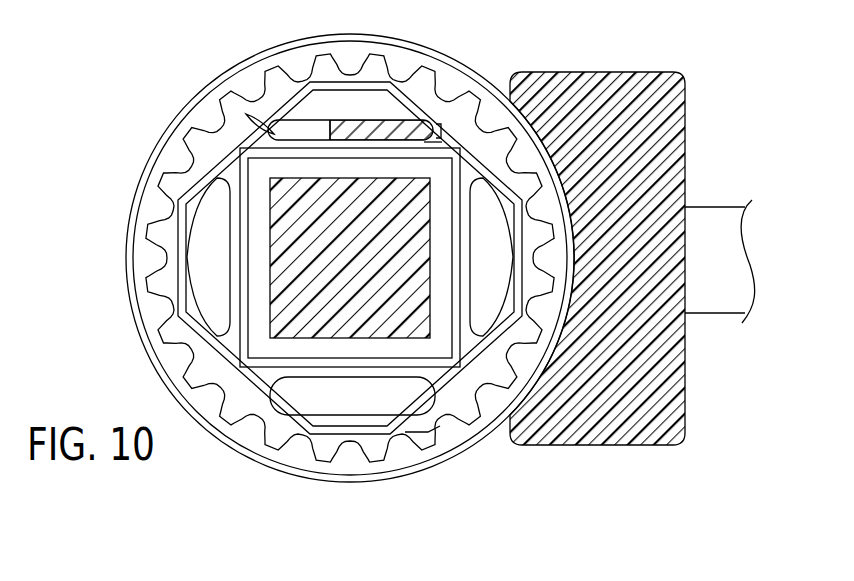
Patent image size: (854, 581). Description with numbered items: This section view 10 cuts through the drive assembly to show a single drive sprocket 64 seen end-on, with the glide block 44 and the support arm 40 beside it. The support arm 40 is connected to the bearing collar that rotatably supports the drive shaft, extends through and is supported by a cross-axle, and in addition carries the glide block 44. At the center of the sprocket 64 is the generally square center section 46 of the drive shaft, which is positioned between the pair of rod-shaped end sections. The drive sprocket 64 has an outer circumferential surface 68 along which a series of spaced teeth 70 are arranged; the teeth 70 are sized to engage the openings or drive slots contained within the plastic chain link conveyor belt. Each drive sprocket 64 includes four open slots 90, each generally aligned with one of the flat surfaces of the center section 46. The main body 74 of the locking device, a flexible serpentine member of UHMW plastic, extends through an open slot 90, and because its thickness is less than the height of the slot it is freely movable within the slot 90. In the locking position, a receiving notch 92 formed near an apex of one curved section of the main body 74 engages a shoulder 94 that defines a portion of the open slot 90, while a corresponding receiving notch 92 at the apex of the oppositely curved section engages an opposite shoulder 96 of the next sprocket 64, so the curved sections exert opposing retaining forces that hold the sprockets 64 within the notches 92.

The section view 10 is at (165, 0).
The support arm 40 is at (716, 228).
The glide block 44 is at (633, 100).
The center section 46 is at (330, 332).
The drive sprocket 64 is at (190, 170).
The outer circumferential surface 68 is at (193, 350).
The teeth 70 is at (423, 437).
The main body 74 is at (375, 128).
The open slot 90 is at (337, 98).
The receiving notch 92 is at (434, 126).
The shoulder 94 is at (432, 140).
The opposite shoulder 96 is at (263, 128).